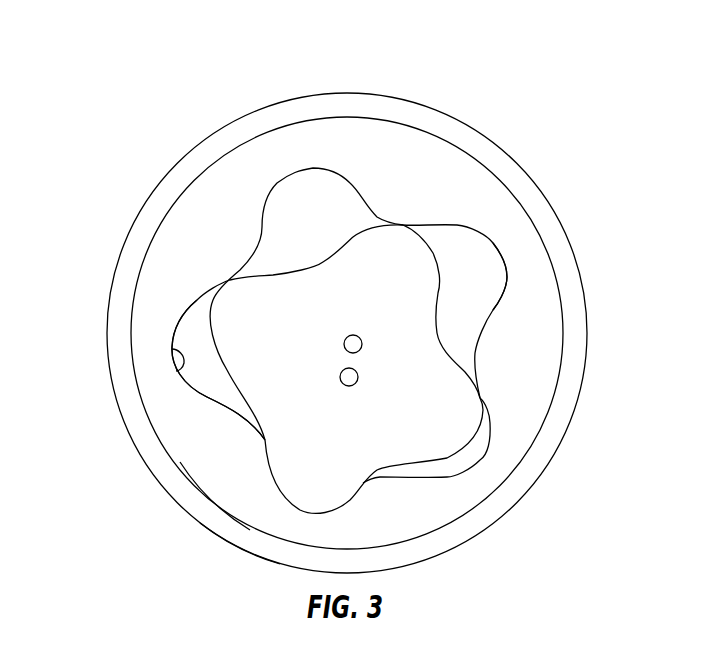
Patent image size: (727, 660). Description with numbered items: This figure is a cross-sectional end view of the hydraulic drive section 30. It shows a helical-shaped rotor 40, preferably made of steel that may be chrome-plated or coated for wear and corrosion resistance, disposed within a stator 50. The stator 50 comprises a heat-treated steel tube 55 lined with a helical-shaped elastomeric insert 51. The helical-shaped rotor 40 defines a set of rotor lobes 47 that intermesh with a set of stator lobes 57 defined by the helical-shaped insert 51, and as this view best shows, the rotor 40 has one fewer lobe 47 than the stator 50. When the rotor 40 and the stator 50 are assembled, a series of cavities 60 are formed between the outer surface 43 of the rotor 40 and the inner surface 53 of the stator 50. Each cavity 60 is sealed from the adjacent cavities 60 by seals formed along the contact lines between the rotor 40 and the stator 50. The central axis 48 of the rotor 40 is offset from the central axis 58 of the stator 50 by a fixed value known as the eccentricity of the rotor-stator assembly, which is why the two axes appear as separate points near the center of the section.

The hydraulic drive section 30 is at (150, 78).
The helical-shaped rotor 40 is at (457, 410).
The outer surface 43 is at (207, 330).
The rotor lobes 47 is at (397, 247).
The central axis 48 is at (349, 377).
The stator 50 is at (337, 93).
The helical-shaped elastomeric insert 51 is at (207, 465).
The inner surface 53 is at (172, 350).
The steel tube 55 is at (233, 533).
The stator lobes 57 is at (198, 298).
The central axis 58 is at (353, 344).
The cavities 60 is at (217, 380).